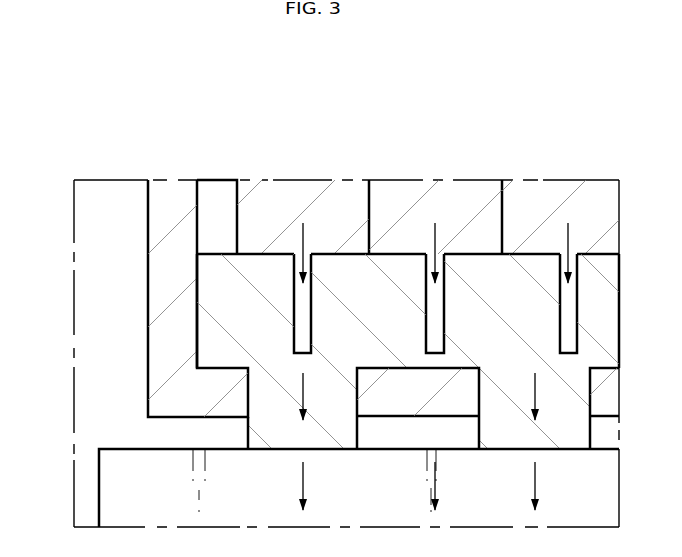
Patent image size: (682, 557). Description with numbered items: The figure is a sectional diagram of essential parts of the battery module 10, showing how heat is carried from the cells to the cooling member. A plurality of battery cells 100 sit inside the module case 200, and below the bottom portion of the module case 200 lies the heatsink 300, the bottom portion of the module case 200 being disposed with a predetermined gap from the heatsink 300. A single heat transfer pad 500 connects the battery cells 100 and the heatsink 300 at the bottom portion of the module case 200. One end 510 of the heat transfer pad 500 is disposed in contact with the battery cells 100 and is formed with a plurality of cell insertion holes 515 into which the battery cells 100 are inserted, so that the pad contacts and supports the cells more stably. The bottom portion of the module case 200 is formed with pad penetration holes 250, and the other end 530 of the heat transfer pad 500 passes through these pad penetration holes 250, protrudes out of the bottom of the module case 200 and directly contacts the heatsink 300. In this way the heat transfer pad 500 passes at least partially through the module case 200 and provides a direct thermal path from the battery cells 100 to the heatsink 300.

The battery module 10 is at (86, 112).
The battery cell 100 is at (291, 200).
The module case 200 is at (168, 188).
The pad penetration hole 250 is at (358, 393).
The heatsink 300 is at (121, 490).
The heat transfer pad 500 is at (190, 329).
The one end of the heat transfer pad 510 is at (470, 250).
The cell insertion hole 515 is at (308, 312).
The other end of the heat transfer pad 530 is at (266, 440).